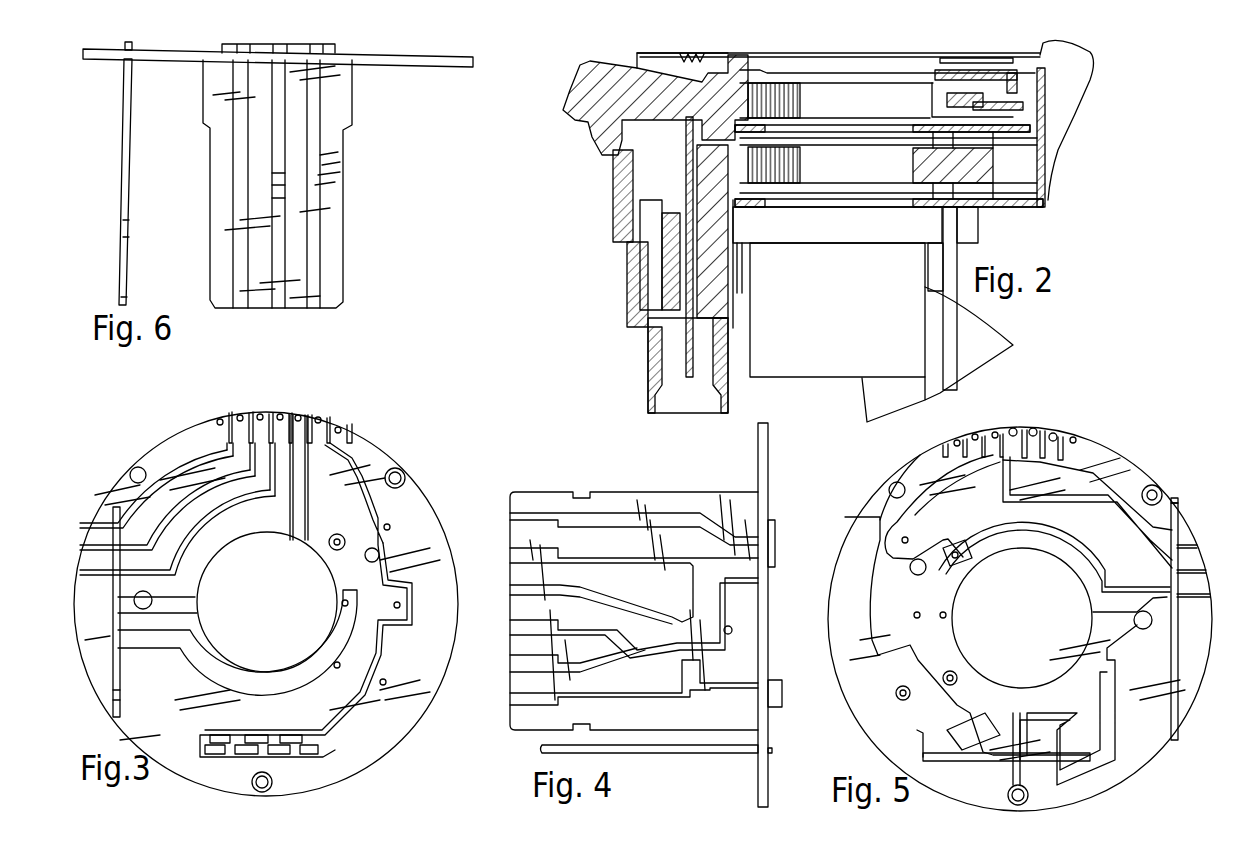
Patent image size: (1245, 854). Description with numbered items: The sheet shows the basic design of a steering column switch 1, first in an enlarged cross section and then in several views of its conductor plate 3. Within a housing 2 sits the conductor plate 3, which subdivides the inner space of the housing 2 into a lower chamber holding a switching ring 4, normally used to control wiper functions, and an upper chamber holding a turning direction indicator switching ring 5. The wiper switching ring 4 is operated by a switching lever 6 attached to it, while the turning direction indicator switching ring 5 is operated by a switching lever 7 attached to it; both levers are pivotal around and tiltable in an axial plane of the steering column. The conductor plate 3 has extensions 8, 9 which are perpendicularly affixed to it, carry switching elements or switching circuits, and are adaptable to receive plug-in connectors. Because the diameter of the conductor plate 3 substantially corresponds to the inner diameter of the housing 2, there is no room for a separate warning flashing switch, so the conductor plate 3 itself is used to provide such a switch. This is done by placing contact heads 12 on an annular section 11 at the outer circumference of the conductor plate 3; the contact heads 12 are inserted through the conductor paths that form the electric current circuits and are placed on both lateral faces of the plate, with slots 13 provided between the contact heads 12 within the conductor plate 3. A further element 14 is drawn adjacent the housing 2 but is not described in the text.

In FIG. 2, the steering column switch 1 is at (1045, 203).
In FIG. 2, the housing 2 is at (1000, 210).
In FIG. 6, the conductor plate 3 is at (422, 63).
In FIG. 2, the conductor plate 3 is at (1008, 130).
In FIG. 3, the conductor plate 3 is at (402, 718).
In FIG. 4, the conductor plate 3 is at (758, 467).
In FIG. 5, the conductor plate 3 is at (852, 545).
In FIG. 2, the switching ring 4 is at (845, 172).
In FIG. 2, the turning direction indicator switching ring 5 is at (806, 98).
In FIG. 2, the switching lever 6 is at (1075, 70).
In FIG. 2, the switching lever 7 is at (565, 121).
In FIG. 6, the extension 8 is at (343, 290).
In FIG. 2, the extension 8 is at (685, 365).
In FIG. 4, the extension 8 is at (700, 756).
In FIG. 5, the extension 8 is at (998, 762).
In FIG. 6, the extension 9 is at (126, 275).
In FIG. 3, the extension 9 is at (116, 612).
In FIG. 4, the extension 9 is at (530, 722).
In FIG. 5, the extension 9 is at (1178, 618).
In FIG. 3, the annular section 11 is at (292, 411).
In FIG. 5, the annular section 11 is at (1015, 424).
In FIG. 3, the contact heads 12 is at (275, 462).
In FIG. 5, the contact heads 12 is at (1003, 462).
In FIG. 3, the slots 13 is at (282, 412).
In FIG. 5, the slots 13 is at (1000, 432).
In FIG. 2, the housing wall 14 is at (1046, 172).